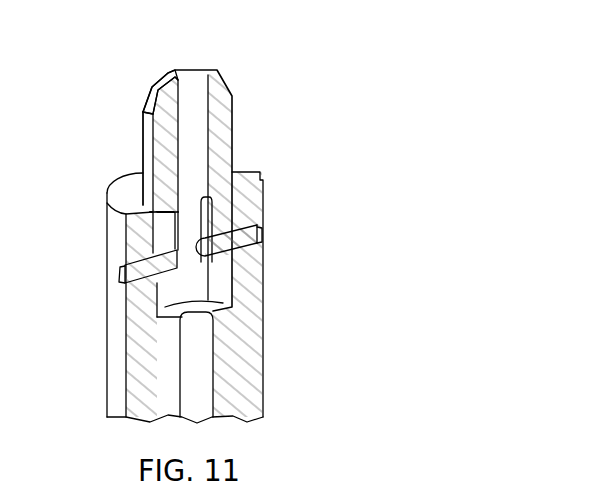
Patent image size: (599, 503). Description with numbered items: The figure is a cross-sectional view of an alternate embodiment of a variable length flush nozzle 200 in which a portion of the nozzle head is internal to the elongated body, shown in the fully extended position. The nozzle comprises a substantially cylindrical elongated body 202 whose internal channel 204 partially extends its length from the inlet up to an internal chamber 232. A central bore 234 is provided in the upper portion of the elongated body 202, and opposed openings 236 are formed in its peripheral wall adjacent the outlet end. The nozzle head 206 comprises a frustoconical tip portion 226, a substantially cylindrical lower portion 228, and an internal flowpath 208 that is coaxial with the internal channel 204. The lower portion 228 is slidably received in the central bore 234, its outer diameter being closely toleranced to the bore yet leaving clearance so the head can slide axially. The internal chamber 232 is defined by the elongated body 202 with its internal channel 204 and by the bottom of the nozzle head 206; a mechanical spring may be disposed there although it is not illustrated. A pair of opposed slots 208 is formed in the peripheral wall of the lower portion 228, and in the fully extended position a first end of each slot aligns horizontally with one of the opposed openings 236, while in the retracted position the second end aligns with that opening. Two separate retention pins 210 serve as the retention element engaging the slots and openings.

The variable length flush nozzle 200 is at (207, 224).
The elongated body 202 is at (264, 387).
The internal channel 204 is at (202, 353).
The nozzle head 206 is at (221, 168).
The internal flowpath 208 is at (183, 83).
The retention pins 210 is at (131, 279).
The frustoconical tip portion 226 is at (147, 97).
The substantially cylindrical lower portion 228 is at (143, 150).
The internal chamber 232 is at (228, 287).
The central bore 234 is at (222, 200).
The opposed openings 236 is at (123, 270).